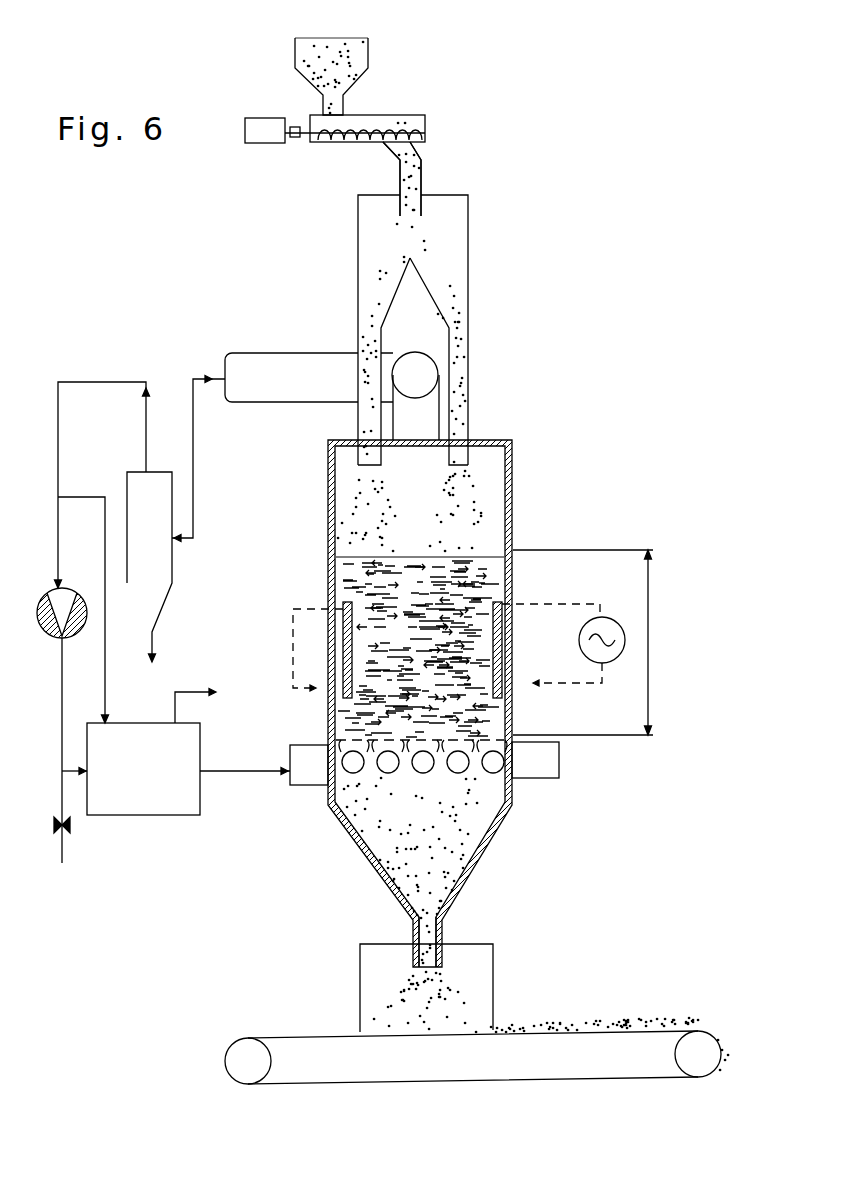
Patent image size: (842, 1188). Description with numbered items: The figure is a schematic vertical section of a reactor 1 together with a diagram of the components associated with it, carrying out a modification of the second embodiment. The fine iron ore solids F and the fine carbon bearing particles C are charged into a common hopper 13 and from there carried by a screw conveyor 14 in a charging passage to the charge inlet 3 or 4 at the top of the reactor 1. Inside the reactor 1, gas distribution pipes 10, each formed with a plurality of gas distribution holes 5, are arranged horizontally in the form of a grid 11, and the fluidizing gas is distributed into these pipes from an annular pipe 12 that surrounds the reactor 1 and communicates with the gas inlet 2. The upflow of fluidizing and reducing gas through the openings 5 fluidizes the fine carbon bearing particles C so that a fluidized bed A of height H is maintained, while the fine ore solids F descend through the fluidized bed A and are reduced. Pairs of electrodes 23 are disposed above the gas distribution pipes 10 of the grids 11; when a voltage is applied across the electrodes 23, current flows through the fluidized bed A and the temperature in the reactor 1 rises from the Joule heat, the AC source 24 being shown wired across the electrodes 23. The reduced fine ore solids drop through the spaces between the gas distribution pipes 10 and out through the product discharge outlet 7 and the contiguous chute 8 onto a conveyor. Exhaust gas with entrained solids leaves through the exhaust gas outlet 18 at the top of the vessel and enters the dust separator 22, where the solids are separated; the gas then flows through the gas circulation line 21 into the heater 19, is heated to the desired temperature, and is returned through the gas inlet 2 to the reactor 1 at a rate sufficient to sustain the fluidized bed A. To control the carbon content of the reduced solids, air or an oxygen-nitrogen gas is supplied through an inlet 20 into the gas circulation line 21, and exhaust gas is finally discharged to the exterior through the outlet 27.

The reactor 1 is at (515, 455).
The gas inlet 2 is at (237, 773).
The iron ore charge inlet 3 is at (417, 160).
The carbon bearing particle charge inlet 4 is at (485, 162).
The gas distribution holes 5 is at (410, 765).
The product discharge outlet 7 is at (432, 917).
The chute 8 is at (410, 937).
The gas distribution pipes 10 is at (478, 770).
The grid 11 is at (492, 772).
The annular pipe 12 is at (305, 752).
The common hopper 13 is at (372, 57).
The screw conveyor 14 is at (412, 124).
The exhaust gas outlet 18 is at (422, 374).
The heater 19 is at (163, 789).
The inlet 20 is at (62, 850).
The gas circulation line 21 is at (213, 377).
The dust separator 22 is at (160, 568).
The electrodes 23 is at (343, 640).
The AC power source 24 is at (610, 617).
The outlet 27 is at (211, 701).
The fluidized bed A is at (478, 573).
The fine carbon bearing particles C is at (352, 37).
The fine iron ore solids F is at (309, 37).
The height H is at (593, 642).